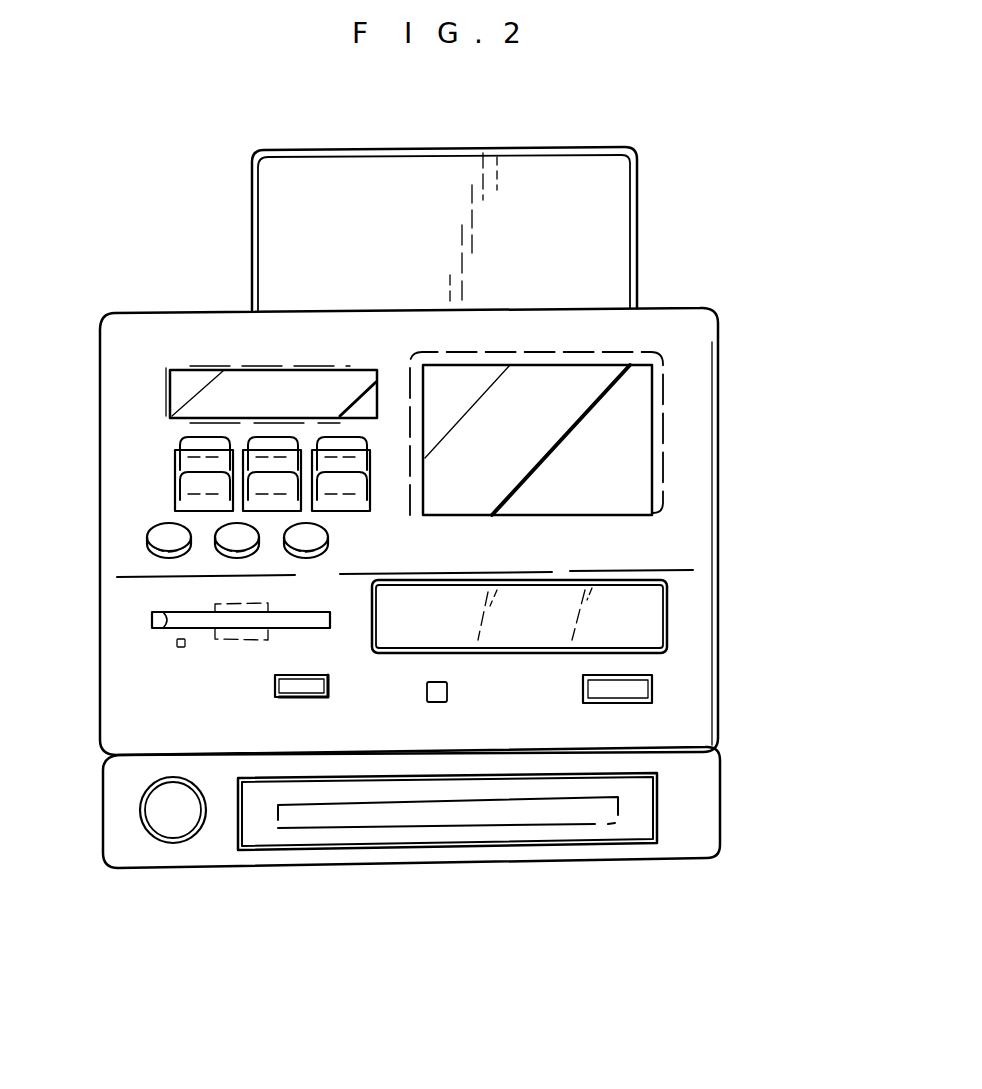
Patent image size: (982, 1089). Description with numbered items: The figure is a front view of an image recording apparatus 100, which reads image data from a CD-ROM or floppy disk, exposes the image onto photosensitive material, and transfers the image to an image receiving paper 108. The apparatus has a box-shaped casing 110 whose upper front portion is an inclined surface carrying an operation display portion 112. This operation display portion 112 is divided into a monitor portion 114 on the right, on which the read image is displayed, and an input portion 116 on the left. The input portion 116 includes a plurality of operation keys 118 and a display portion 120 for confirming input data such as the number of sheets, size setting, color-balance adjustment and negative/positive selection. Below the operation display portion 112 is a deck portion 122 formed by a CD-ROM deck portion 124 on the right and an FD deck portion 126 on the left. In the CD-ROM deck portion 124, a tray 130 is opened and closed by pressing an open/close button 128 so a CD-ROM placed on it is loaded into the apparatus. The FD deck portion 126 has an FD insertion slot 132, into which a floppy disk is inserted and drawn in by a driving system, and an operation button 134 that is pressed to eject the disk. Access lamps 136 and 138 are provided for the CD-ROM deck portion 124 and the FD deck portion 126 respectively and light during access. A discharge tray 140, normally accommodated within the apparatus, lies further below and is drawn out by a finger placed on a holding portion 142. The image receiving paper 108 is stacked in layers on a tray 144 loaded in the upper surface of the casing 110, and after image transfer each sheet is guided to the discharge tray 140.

The image recording apparatus 100 is at (740, 375).
The image receiving paper 108 is at (602, 172).
The casing 110 is at (703, 511).
The operation display portion 112 is at (245, 258).
The monitor portion 114 is at (448, 393).
The input portion 116 is at (157, 373).
The operation keys 118 is at (167, 535).
The display portion 120 is at (178, 392).
The deck portion 122 is at (803, 585).
The CD-ROM deck portion 124 is at (671, 620).
The FD deck portion 126 is at (331, 634).
The open/close button 128 is at (652, 702).
The tray 130 is at (655, 597).
The FD insertion slot 132 is at (163, 632).
The operation button 134 is at (325, 688).
The access lamp 136 is at (447, 697).
The access lamp 138 is at (181, 648).
The discharge tray 140 is at (657, 800).
The holding portion 142 is at (540, 802).
The tray 144 is at (637, 207).